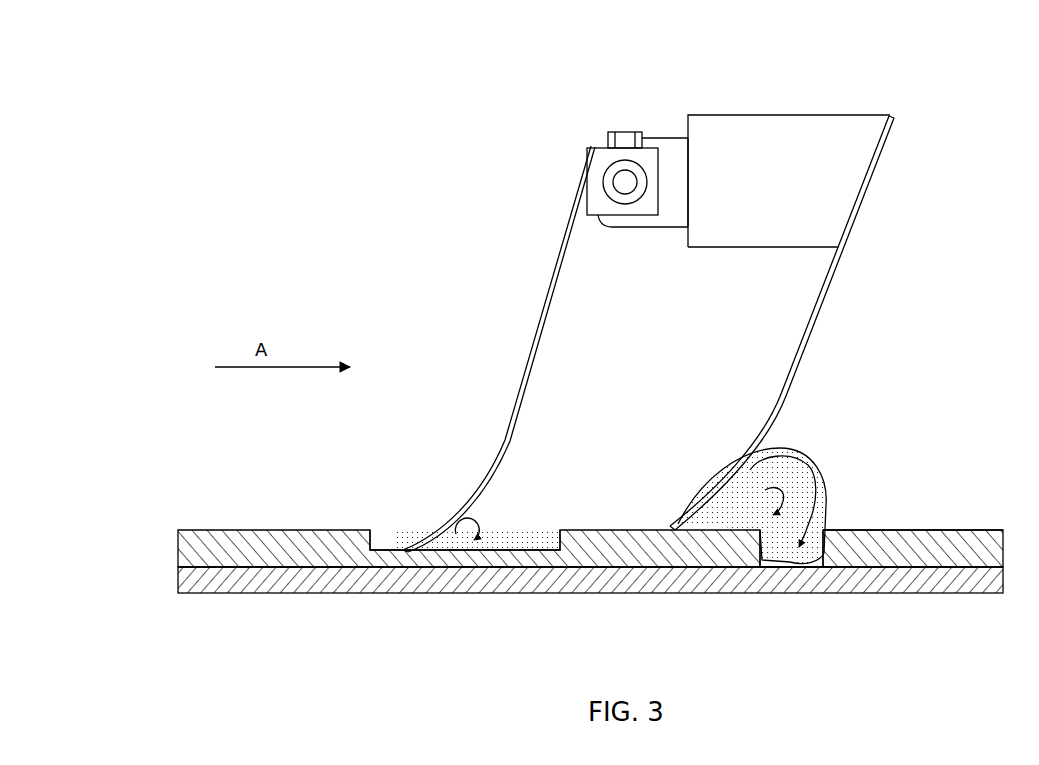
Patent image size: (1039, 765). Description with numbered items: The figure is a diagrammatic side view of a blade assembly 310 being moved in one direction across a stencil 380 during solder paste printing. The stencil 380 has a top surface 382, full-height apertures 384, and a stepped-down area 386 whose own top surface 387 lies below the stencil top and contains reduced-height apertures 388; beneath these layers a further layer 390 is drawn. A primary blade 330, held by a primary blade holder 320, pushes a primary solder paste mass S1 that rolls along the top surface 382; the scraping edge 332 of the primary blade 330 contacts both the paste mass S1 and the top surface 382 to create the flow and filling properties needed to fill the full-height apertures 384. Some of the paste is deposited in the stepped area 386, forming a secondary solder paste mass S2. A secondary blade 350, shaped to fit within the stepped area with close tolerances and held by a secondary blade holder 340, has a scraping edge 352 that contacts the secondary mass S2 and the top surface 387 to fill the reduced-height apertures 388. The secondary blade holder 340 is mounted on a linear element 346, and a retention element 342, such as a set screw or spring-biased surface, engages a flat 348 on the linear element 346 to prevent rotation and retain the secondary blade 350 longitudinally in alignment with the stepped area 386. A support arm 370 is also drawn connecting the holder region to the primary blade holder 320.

The blade assembly 310 is at (926, 126).
The primary blade holder 320 is at (744, 181).
The primary blade 330 is at (833, 287).
The scraping edge 332 is at (683, 518).
The secondary blade holder 340 is at (643, 160).
The retention element 342 is at (622, 138).
The linear element 346 is at (620, 183).
The flat 348 is at (623, 163).
The secondary blade 350 is at (540, 352).
The scraping edge 352 is at (405, 545).
The support arm 370 is at (670, 212).
The stencil 380 is at (922, 543).
The top surface 382 is at (265, 530).
The full-height apertures 384 is at (820, 558).
The stepped-down area 386 is at (382, 527).
The top surface 387 is at (385, 549).
The reduced-height apertures 388 is at (455, 557).
The lower substrate layer 390 is at (912, 590).
The primary solder paste mass S1 is at (803, 463).
The secondary solder paste mass S2 is at (520, 530).